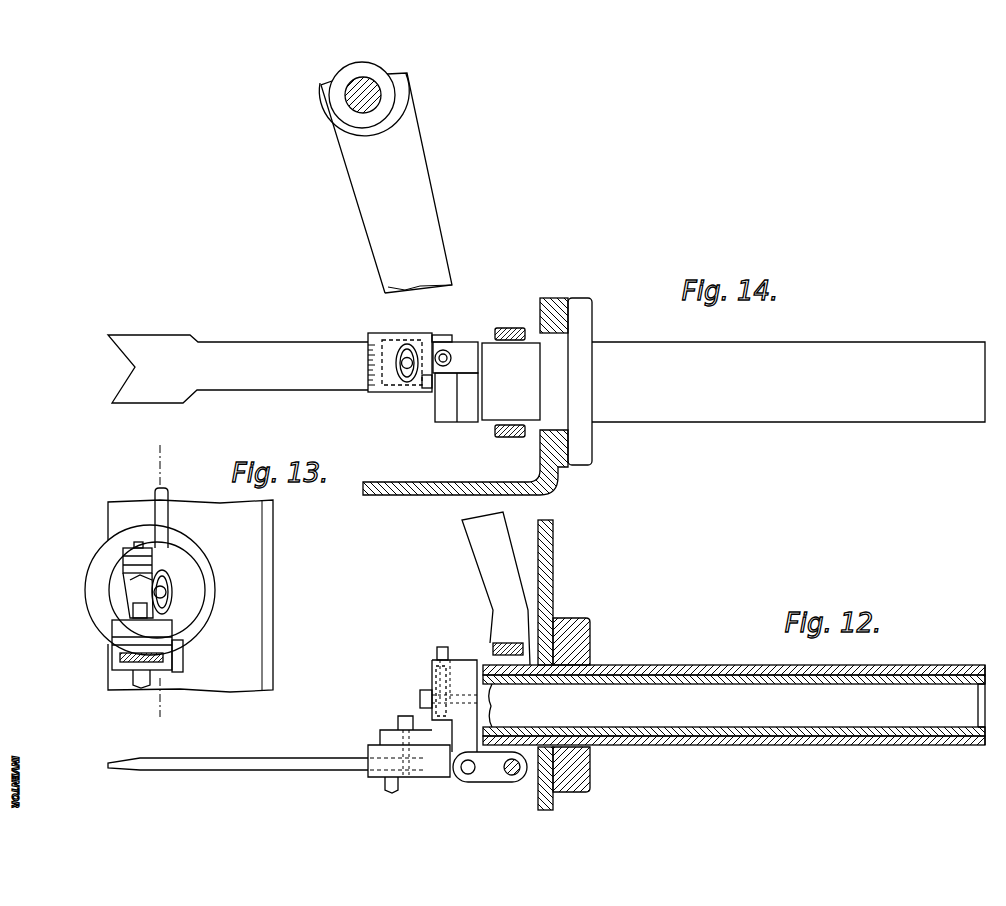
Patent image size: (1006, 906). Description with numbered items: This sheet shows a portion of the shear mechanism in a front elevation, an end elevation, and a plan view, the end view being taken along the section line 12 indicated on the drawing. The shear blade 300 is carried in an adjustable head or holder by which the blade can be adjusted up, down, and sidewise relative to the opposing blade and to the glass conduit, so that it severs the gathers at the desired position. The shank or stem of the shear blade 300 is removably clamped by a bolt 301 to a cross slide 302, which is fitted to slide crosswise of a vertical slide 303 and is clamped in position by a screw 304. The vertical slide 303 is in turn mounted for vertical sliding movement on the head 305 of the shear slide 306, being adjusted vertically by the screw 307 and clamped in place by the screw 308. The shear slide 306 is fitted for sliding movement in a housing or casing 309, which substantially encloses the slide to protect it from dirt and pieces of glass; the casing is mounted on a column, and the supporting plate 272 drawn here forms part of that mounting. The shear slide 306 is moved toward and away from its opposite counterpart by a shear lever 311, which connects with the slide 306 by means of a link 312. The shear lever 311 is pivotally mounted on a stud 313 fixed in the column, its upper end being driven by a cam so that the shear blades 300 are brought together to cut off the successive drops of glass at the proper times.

In FIG. 13, the section line 12- 12 is at (162, 583).
In FIG. 14, the supporting plate 272 is at (555, 488).
In FIG. 12, the supporting plate 272 is at (562, 554).
In FIG. 14, the shear blade 300 is at (280, 388).
In FIG. 12, the shear blade 300 is at (265, 770).
In FIG. 13, the shear blade 300 is at (168, 642).
In FIG. 12, the bolt 301 is at (392, 790).
In FIG. 13, the bolt 301 is at (133, 682).
In FIG. 14, the cross slide 302 is at (378, 396).
In FIG. 12, the cross slide 302 is at (438, 780).
In FIG. 13, the cross slide 302 is at (122, 650).
In FIG. 14, the vertical slide 303 is at (445, 423).
In FIG. 12, the vertical slide 303 is at (433, 673).
In FIG. 13, the vertical slide 303 is at (193, 582).
In FIG. 14, the screw 304 is at (408, 348).
In FIG. 12, the screw 304 is at (397, 718).
In FIG. 13, the screw 304 is at (167, 622).
In FIG. 14, the head 305 is at (467, 340).
In FIG. 12, the head 305 is at (462, 658).
In FIG. 13, the head 305 is at (125, 552).
In FIG. 12, the shear slide 306 is at (730, 665).
In FIG. 14, the screw 307 is at (457, 360).
In FIG. 12, the screw 307 is at (437, 657).
In FIG. 13, the screw 307 is at (148, 548).
In FIG. 14, the screw 308 is at (425, 400).
In FIG. 12, the screw 308 is at (420, 698).
In FIG. 13, the screw 308 is at (170, 593).
In FIG. 14, the casing 309 is at (745, 415).
In FIG. 12, the casing 309 is at (782, 745).
In FIG. 14, the shear lever 311 is at (418, 186).
In FIG. 12, the shear lever 311 is at (489, 568).
In FIG. 13, the shear lever 311 is at (167, 525).
In FIG. 12, the link 312 is at (497, 776).
In FIG. 14, the stud 313 is at (380, 100).